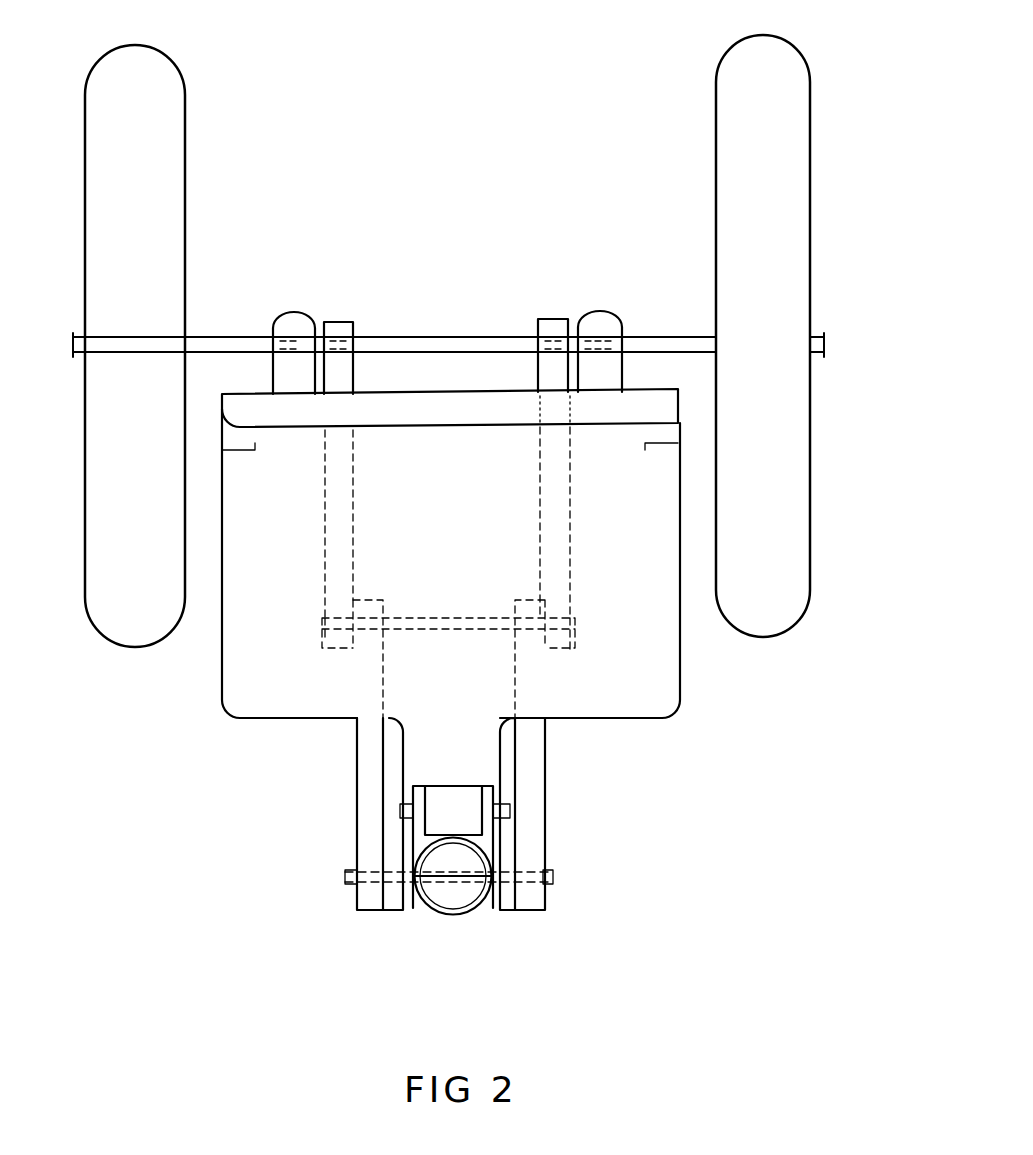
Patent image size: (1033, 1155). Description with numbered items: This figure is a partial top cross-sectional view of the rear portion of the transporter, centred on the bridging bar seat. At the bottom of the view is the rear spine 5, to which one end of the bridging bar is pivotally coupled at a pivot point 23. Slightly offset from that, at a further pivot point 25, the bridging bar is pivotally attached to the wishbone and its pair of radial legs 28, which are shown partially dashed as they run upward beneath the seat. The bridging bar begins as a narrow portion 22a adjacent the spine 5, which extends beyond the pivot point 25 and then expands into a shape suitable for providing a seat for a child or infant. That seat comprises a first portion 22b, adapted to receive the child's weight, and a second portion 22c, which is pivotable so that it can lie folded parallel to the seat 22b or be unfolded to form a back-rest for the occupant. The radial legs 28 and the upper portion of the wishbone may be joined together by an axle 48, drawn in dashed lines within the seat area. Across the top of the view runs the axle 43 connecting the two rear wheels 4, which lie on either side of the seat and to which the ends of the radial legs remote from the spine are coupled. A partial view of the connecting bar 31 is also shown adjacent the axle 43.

The rear wheels 4 is at (797, 605).
The axle 43 is at (228, 337).
The radial legs 28 is at (553, 318).
The connecting bar 31 is at (596, 318).
The second portion of the bridging bar 22c is at (645, 407).
The first portion of the bridging bar 22b is at (652, 676).
The narrow portion of the bridging bar 22a is at (473, 760).
The axle 48 is at (410, 630).
The pivot point 25 is at (510, 813).
The pivot point 23 is at (553, 878).
The rear spine 5 is at (453, 916).